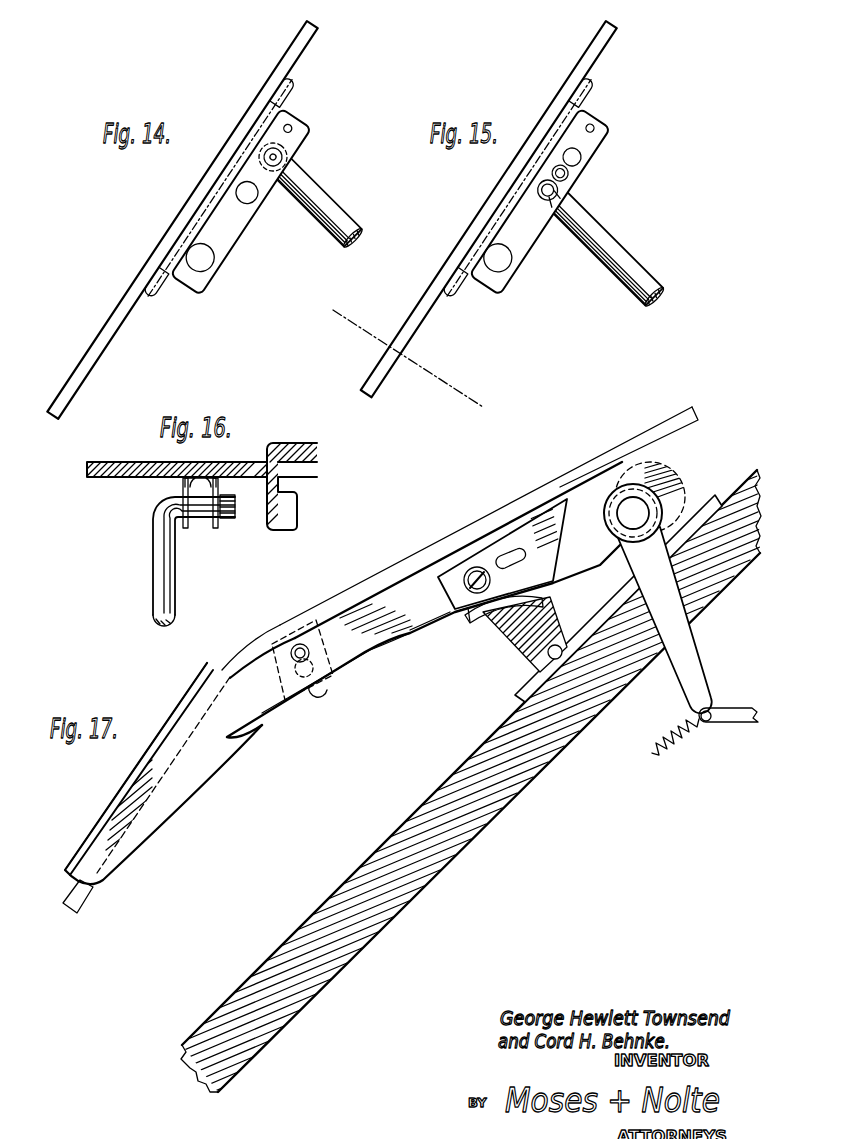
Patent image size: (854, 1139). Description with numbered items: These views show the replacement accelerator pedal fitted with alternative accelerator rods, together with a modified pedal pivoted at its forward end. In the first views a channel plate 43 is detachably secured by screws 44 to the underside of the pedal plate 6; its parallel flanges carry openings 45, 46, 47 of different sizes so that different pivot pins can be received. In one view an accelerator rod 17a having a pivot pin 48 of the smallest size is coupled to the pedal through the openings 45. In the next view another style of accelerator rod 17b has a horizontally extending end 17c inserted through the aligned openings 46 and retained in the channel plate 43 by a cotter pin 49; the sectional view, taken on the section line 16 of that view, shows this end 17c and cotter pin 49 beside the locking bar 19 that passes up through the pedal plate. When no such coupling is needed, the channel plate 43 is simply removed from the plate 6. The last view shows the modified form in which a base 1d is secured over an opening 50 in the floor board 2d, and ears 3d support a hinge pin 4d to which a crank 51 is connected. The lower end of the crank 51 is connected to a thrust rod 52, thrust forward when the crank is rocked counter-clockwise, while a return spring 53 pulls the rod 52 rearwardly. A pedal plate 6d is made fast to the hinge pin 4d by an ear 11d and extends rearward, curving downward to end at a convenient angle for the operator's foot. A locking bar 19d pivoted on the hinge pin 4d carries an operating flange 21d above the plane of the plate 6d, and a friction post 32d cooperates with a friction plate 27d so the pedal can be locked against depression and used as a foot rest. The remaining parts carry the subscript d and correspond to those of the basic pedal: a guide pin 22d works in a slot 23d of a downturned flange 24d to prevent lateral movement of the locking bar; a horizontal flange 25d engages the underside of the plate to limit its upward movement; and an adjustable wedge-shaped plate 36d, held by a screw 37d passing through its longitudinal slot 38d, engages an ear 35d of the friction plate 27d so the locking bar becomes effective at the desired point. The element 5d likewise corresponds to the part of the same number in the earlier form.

In FIG. 14, the plate 6 is at (262, 97).
In FIG. 15, the plate 6 is at (460, 250).
In FIG. 14, the channel plate 43 is at (197, 222).
In FIG. 15, the channel plate 43 is at (560, 133).
In FIG. 16, the channel plate 43 is at (183, 485).
In FIG. 14, the screws 44 is at (154, 290).
In FIG. 14, the openings 45 is at (265, 157).
In FIG. 15, the openings 45 is at (581, 157).
In FIG. 14, the openings 46 is at (241, 200).
In FIG. 15, the openings 46 is at (540, 183).
In FIG. 14, the openings 47 is at (207, 267).
In FIG. 15, the openings 47 is at (504, 267).
In FIG. 14, the pivot pin 48 is at (281, 158).
In FIG. 15, the cotter pin 49 is at (568, 175).
In FIG. 16, the cotter pin 49 is at (229, 519).
In FIG. 14, the accelerator rod 17a is at (333, 204).
In FIG. 15, the accelerator rod 17b is at (611, 245).
In FIG. 15, the horizontally extending end 17c is at (556, 191).
In FIG. 16, the horizontally extending end 17c is at (203, 515).
In FIG. 15, the section line 16 is at (360, 304).
In FIG. 16, the section line 16 is at (140, 463).
In FIG. 16, the locking bar 19 is at (284, 485).
In FIG. 17, the base 1d is at (517, 702).
In FIG. 17, the floor board 2d is at (370, 868).
In FIG. 17, the ears 3d is at (681, 516).
In FIG. 17, the hinge pin 4d is at (628, 506).
In FIG. 17, the plate 5d is at (373, 572).
In FIG. 17, the pedal plate 6d is at (428, 557).
In FIG. 17, the ear 11d is at (655, 437).
In FIG. 17, the locking bar 19d is at (225, 740).
In FIG. 17, the operating flange 21d is at (168, 727).
In FIG. 17, the guide pin 22d is at (310, 648).
In FIG. 17, the slot 23d is at (293, 673).
In FIG. 17, the downturned flange 24d is at (318, 693).
In FIG. 17, the horizontal flange 25d is at (505, 527).
In FIG. 17, the friction plate 27d is at (463, 622).
In FIG. 17, the friction post 32d is at (503, 645).
In FIG. 17, the ear 35d is at (532, 603).
In FIG. 17, the wedge-shaped plate 36d is at (530, 540).
In FIG. 17, the screw 37d is at (476, 567).
In FIG. 17, the longitudinal slot 38d is at (523, 556).
In FIG. 17, the opening 50 is at (683, 648).
In FIG. 17, the crank 51 is at (690, 644).
In FIG. 17, the thrust rod 52 is at (737, 712).
In FIG. 17, the return spring 53 is at (680, 735).